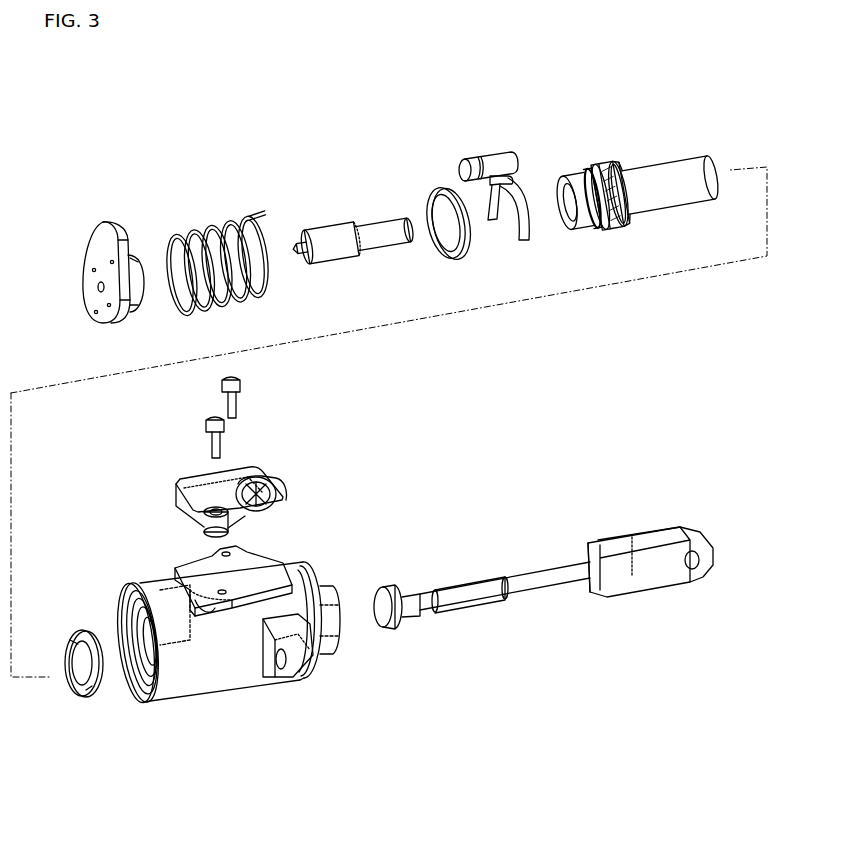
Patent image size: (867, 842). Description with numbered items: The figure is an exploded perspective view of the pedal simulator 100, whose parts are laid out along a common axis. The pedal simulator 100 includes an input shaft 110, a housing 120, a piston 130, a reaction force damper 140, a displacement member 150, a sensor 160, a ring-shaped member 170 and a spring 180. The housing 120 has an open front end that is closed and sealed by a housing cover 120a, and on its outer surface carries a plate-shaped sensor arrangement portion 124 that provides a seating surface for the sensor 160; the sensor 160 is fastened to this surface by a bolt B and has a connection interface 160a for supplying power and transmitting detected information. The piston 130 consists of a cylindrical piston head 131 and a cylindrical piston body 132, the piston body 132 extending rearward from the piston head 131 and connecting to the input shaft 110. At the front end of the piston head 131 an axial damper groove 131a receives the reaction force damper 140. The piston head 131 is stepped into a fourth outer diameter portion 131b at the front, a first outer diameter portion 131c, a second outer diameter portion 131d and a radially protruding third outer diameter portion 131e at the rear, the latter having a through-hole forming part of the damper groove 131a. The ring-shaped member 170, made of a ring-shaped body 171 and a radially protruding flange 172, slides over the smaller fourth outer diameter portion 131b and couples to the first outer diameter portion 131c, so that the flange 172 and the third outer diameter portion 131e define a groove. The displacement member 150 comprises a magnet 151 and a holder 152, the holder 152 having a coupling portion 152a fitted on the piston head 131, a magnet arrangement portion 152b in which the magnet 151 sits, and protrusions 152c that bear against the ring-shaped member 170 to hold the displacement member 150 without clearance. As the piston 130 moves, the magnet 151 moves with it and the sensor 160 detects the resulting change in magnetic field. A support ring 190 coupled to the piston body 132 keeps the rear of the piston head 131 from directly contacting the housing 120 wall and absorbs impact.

The pedal simulator 100 is at (253, 26).
The input shaft 110 is at (472, 585).
The housing 120 is at (232, 666).
The housing cover 120a is at (95, 245).
The sensor arrangement portion 124 is at (250, 560).
The piston 130 is at (572, 93).
The piston head 131 is at (621, 241).
The damper groove 131a is at (555, 178).
The fourth outer diameter portion 131b is at (578, 172).
The first outer diameter portion 131c is at (597, 165).
The second outer diameter portion 131d is at (612, 165).
The third outer diameter portion 131e is at (700, 153).
The piston body 132 is at (716, 224).
The reaction force damper 140 is at (330, 230).
The displacement member 150 is at (475, 145).
The magnet 151 is at (493, 155).
The holder 152 is at (548, 358).
The coupling portion 152a is at (530, 232).
The magnet arrangement portion 152b is at (470, 177).
The protrusions 152c is at (494, 216).
The sensor 160 is at (258, 470).
The connection interface 160a is at (282, 505).
The ring-shaped member 170 is at (430, 185).
The ring-shaped body 171 is at (436, 250).
The flange 172 is at (452, 255).
The spring 180 is at (215, 222).
The support ring 190 is at (72, 628).
The bolt B is at (242, 405).